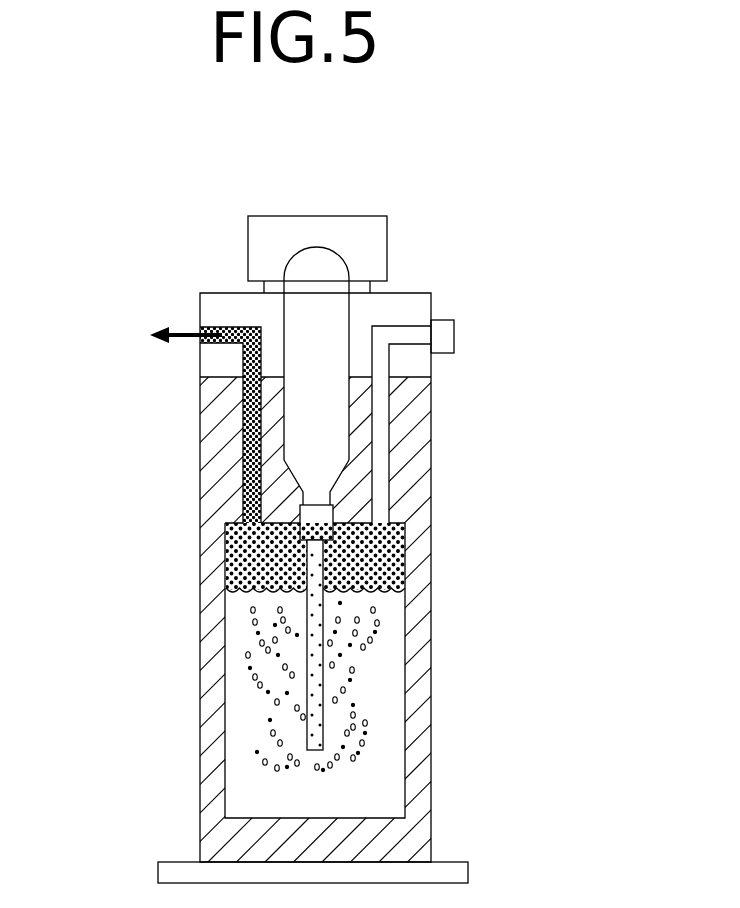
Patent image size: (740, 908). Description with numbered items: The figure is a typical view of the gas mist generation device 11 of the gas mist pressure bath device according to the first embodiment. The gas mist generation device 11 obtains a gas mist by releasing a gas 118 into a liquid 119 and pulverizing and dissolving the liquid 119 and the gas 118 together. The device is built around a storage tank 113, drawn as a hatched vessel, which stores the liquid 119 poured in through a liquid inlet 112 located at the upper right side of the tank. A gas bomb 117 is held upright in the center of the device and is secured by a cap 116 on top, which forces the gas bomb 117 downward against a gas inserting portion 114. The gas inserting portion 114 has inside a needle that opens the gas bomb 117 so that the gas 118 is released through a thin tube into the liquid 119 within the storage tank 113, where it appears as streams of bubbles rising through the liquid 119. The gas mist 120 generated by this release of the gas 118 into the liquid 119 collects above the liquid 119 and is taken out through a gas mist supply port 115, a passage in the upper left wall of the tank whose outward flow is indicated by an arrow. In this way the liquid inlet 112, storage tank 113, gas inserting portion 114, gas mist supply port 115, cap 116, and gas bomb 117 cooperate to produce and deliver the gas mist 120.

The gas mist generation device 11 is at (174, 214).
The liquid inlet 112 is at (444, 316).
The storage tank 113 is at (412, 655).
The gas inserting portion 114 is at (323, 524).
The gas mist supply port 115 is at (237, 325).
The cap 116 is at (360, 215).
The gas bomb 117 is at (288, 421).
The gas 118 is at (252, 668).
The liquid 119 is at (240, 735).
The gas mist 120 is at (237, 552).